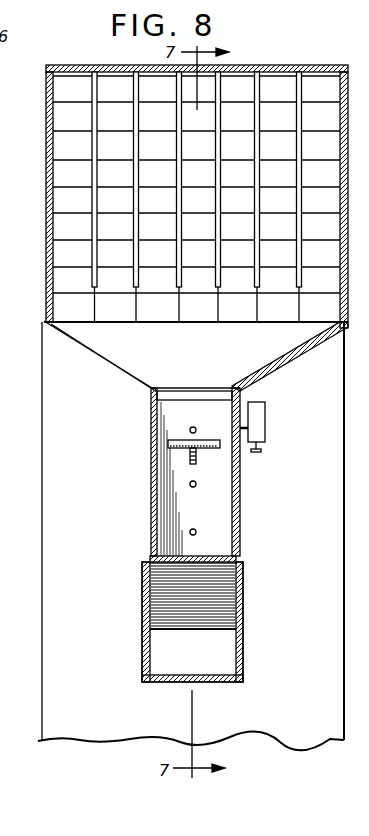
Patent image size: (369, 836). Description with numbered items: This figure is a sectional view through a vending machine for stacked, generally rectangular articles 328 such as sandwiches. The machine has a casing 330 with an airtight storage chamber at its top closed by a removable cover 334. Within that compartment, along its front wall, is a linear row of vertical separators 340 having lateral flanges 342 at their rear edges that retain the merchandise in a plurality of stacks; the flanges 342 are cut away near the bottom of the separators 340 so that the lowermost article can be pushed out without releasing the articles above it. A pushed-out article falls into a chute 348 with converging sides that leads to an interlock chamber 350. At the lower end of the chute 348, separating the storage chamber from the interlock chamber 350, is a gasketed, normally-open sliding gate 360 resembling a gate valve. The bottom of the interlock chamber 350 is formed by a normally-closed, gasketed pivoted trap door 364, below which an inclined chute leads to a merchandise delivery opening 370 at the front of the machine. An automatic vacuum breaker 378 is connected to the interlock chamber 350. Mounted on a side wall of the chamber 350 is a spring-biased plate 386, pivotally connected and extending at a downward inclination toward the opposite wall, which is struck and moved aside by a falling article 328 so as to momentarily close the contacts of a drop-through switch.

The articles 328 is at (107, 173).
The casing 330 is at (43, 396).
The removable cover 334 is at (108, 50).
The vertical separators 340 is at (250, 302).
The lateral flanges 342 is at (136, 95).
The chute 348 is at (258, 352).
The interlock chamber 350 is at (213, 512).
The sliding gate 360 is at (183, 396).
The trap door 364 is at (208, 563).
The merchandise delivery opening 370 is at (170, 665).
The automatic vacuum breaker 378 is at (268, 427).
The spring-biased plate 386 is at (178, 448).